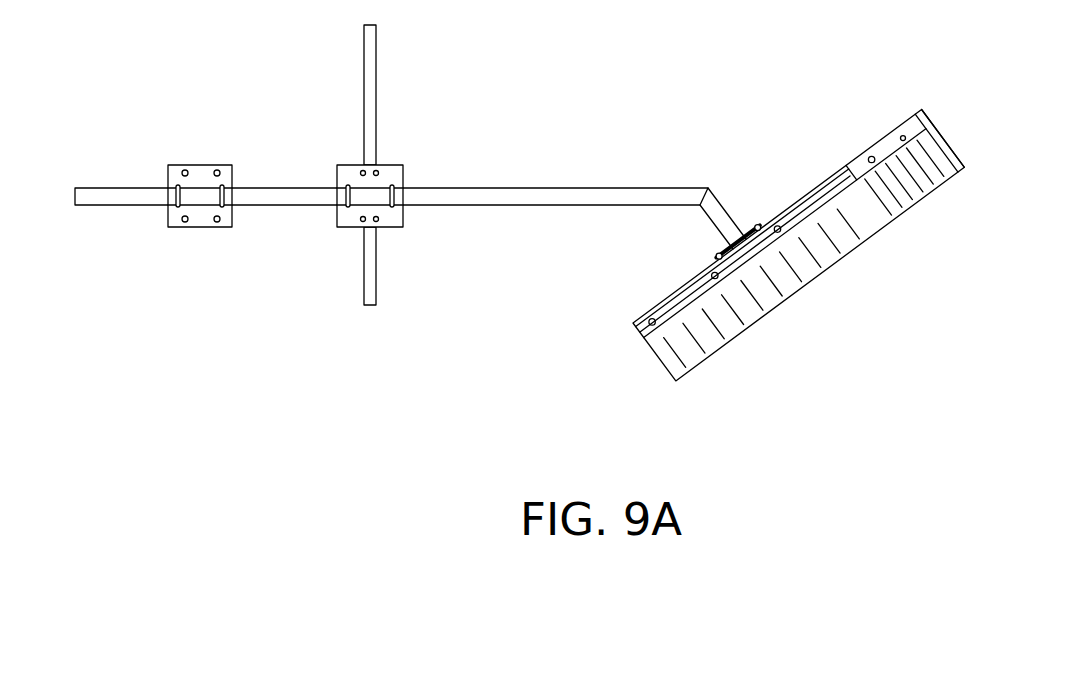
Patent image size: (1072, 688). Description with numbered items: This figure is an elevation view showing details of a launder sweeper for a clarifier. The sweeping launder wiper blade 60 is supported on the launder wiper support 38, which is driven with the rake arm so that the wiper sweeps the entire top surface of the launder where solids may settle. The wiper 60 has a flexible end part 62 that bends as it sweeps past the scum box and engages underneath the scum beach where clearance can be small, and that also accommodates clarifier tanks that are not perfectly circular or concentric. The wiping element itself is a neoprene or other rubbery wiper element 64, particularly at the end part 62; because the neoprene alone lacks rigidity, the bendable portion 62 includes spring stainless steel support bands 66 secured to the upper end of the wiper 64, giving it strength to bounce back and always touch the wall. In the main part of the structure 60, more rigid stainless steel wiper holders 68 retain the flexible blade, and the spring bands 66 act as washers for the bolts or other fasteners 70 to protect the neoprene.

The launder wiper support 38 is at (542, 192).
The sweeping launder wiper blade 60 is at (851, 222).
The flexible end part 62 is at (897, 113).
The neoprene wiper element 64 is at (945, 178).
The spring stainless steel support band 66 is at (912, 127).
The stainless steel wiper holder 68 is at (803, 205).
The fasteners 70 is at (777, 226).